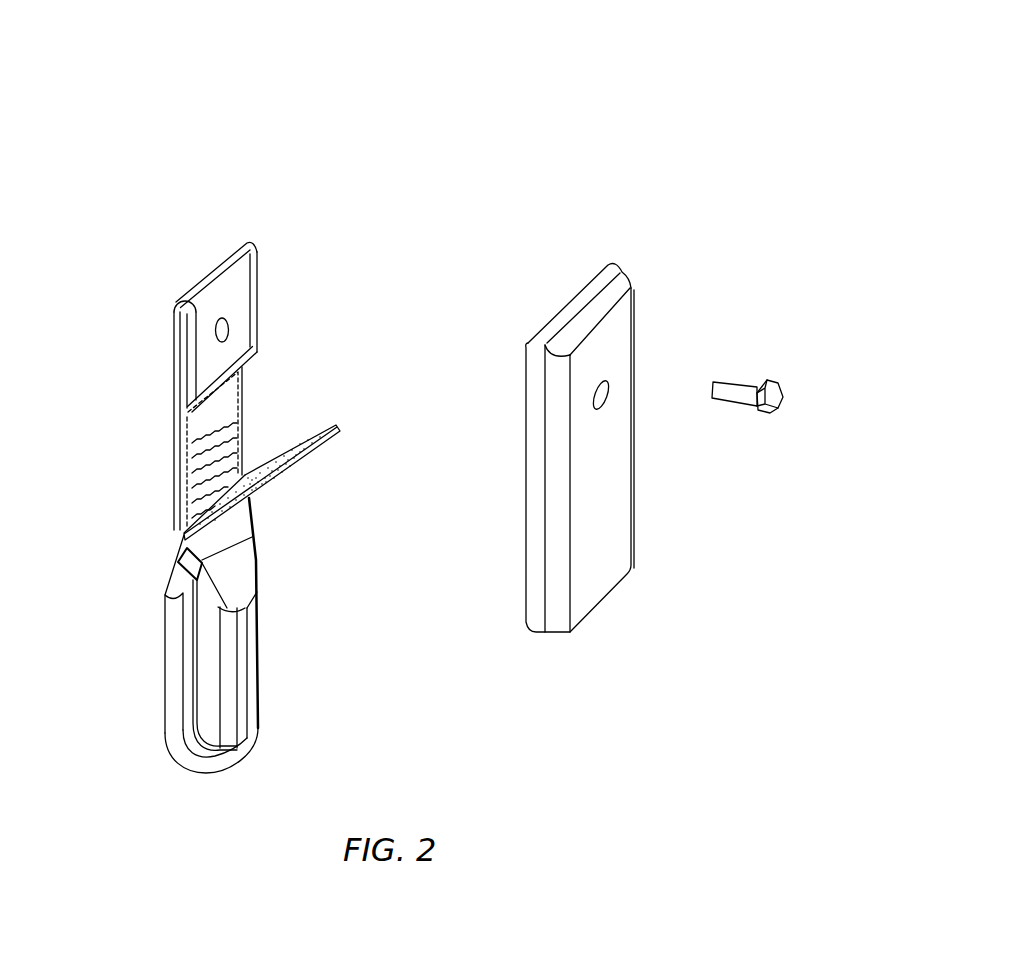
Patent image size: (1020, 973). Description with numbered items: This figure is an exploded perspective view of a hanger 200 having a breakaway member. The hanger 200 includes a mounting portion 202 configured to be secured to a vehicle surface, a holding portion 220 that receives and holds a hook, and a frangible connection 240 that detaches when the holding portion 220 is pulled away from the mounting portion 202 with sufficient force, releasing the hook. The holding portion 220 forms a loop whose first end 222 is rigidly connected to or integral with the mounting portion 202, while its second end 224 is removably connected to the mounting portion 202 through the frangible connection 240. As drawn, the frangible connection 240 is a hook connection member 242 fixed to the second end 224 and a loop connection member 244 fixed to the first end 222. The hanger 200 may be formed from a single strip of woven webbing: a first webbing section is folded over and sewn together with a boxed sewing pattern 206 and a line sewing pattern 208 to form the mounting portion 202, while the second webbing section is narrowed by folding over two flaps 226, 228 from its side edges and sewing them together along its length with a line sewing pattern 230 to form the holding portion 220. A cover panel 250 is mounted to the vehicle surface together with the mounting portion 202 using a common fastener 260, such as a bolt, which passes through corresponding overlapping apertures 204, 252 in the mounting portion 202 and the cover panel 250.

The hanger 200 is at (523, 132).
The mounting portion 202 is at (260, 293).
The aperture 204 is at (230, 338).
The boxed sewing pattern 206 is at (231, 268).
The line sewing pattern 208 is at (182, 402).
The holding portion 220 is at (289, 644).
The first end 222 is at (175, 521).
The second end 224 is at (270, 487).
The flap 226 is at (190, 700).
The flap 228 is at (203, 568).
The line sewing pattern 230 is at (247, 697).
The frangible connection 240 is at (250, 405).
The hook connection member 242 is at (290, 447).
The loop connection member 244 is at (240, 415).
The cover panel 250 is at (620, 292).
The aperture 252 is at (607, 382).
The fastener 260 is at (737, 390).